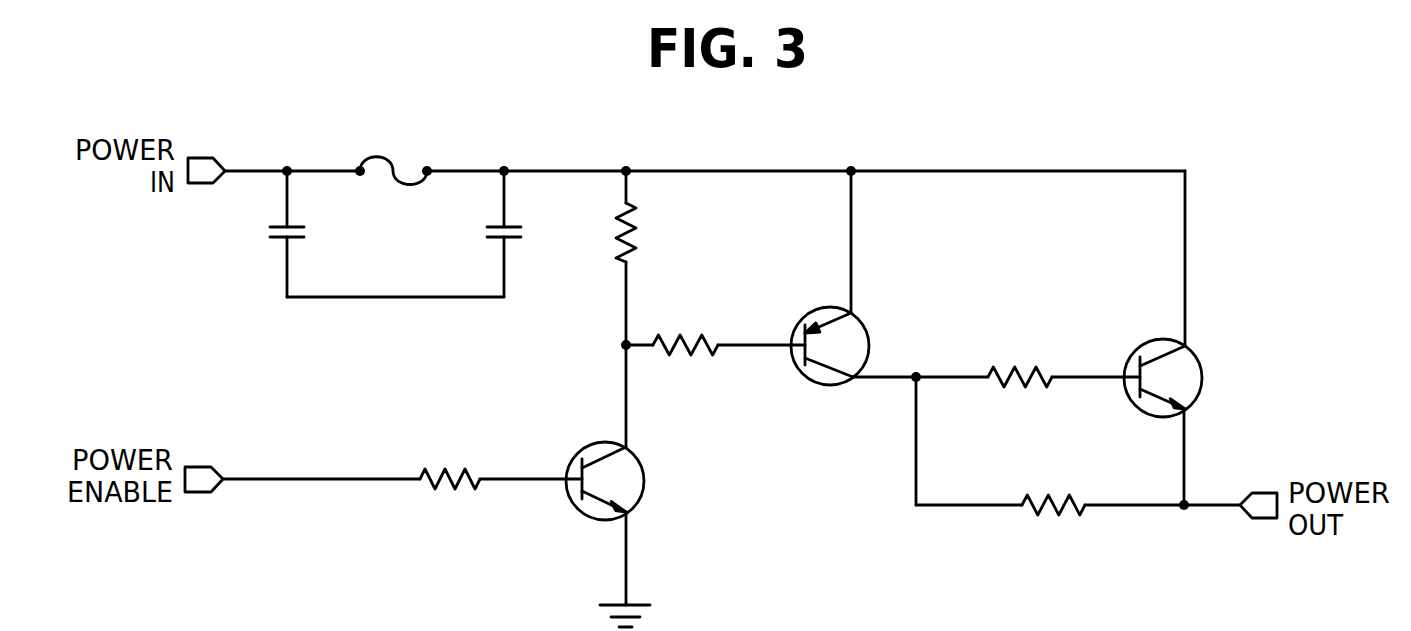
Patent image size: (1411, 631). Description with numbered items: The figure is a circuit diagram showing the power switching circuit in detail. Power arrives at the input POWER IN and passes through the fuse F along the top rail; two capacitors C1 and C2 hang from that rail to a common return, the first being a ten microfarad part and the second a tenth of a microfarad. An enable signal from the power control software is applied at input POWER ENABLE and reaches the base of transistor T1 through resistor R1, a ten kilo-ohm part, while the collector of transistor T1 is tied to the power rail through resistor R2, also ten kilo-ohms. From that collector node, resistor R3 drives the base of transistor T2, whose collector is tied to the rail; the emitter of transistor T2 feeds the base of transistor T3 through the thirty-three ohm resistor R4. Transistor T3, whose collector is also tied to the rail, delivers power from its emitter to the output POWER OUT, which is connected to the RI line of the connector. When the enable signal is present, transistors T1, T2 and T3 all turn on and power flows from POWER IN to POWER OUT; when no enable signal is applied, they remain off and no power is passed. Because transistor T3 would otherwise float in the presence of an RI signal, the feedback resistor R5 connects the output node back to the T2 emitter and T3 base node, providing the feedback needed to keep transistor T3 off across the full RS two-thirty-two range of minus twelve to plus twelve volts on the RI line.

The fuse F is at (393, 147).
The capacitor C1 is at (307, 234).
The capacitor C2 is at (527, 234).
The resistor R1 is at (450, 501).
The resistor R2 is at (651, 258).
The resistor R3 is at (685, 367).
The resistor R4 is at (1020, 358).
The feedback resistor R5 is at (1053, 485).
The transistor T1 is at (622, 437).
The transistor T2 is at (830, 300).
The transistor T3 is at (1187, 378).